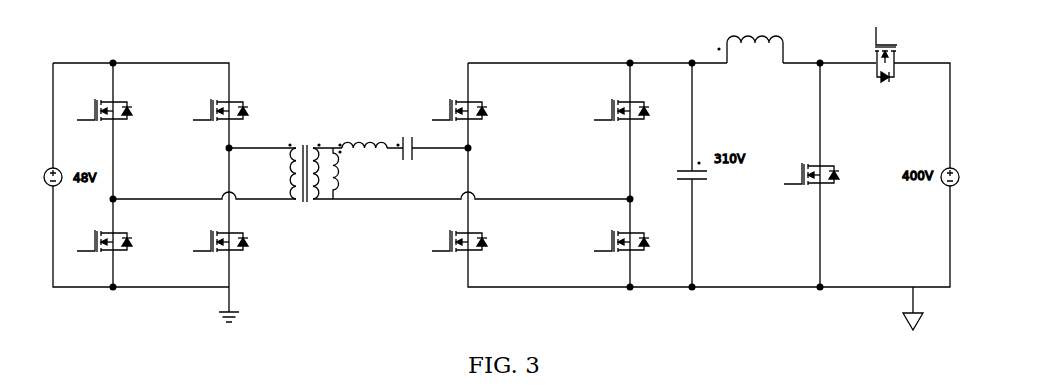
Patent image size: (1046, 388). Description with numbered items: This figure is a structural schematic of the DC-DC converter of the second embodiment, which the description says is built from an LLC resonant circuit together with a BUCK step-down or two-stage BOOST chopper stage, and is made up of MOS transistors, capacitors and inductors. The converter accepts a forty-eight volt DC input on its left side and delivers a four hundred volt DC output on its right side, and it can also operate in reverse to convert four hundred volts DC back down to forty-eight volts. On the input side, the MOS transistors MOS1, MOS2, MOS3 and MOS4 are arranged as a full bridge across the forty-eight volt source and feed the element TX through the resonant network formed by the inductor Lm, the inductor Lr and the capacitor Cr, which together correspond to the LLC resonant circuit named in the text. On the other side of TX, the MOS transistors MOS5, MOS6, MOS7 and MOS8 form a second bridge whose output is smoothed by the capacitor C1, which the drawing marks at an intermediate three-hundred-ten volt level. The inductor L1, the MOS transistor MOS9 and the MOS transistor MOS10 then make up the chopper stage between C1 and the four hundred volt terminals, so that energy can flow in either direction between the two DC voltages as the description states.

The primary bridge MOSFET MOS1 is at (128, 110).
The primary bridge MOSFET MOS2 is at (128, 241).
The primary bridge MOSFET MOS3 is at (244, 110).
The primary bridge MOSFET MOS4 is at (244, 241).
The secondary bridge MOSFET MOS5 is at (484, 110).
The secondary bridge MOSFET MOS6 is at (484, 241).
The secondary bridge MOSFET MOS7 is at (603, 110).
The secondary bridge MOSFET MOS8 is at (603, 241).
The boost switch MOSFET MOS9 is at (795, 174).
The boost rectifier MOSFET MOS10 is at (887, 65).
The transformer TX is at (304, 167).
The magnetizing inductor Lm is at (348, 173).
The resonant inductor Lr is at (364, 137).
The resonant capacitor Cr is at (408, 139).
The intermediate bus capacitor C1 is at (704, 177).
The boost inductor L1 is at (755, 42).